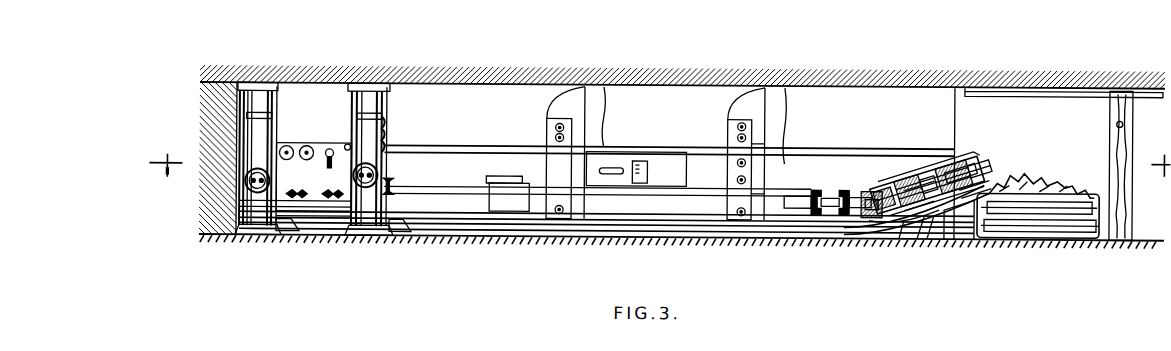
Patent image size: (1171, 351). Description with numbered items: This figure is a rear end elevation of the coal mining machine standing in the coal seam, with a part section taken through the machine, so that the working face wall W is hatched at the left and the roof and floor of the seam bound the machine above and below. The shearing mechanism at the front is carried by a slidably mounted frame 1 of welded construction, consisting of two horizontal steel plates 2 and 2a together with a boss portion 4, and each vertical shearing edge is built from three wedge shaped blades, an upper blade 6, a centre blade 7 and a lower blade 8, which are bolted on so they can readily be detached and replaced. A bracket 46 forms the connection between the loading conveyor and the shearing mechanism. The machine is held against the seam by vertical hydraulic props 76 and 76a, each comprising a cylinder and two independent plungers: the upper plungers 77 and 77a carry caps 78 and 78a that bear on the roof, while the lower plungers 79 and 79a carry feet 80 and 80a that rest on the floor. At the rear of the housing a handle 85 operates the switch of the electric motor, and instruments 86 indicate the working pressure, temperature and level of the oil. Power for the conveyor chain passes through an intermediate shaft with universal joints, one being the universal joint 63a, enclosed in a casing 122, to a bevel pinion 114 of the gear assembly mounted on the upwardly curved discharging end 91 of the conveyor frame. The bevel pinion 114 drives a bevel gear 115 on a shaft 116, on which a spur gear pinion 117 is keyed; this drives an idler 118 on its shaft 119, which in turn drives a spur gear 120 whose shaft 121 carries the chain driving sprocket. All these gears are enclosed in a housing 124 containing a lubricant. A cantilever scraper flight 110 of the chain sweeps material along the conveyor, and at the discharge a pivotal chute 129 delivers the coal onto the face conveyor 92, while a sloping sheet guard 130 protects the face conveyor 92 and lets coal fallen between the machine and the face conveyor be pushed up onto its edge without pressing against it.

The slidably mounted frame 1 is at (160, 165).
The horizontal steel plate 2 is at (480, 140).
The horizontal steel plate 2a is at (452, 206).
The boss portion 4 is at (628, 160).
The upper blade 6 is at (758, 127).
The centre blade 7 is at (760, 158).
The lower blade 8 is at (780, 228).
The bracket 46 is at (505, 200).
The universal joint 63a is at (835, 203).
The vertical hydraulic prop 76 is at (403, 217).
The vertical hydraulic prop 76a is at (257, 214).
The upper plunger 77 is at (387, 112).
The upper plunger 77a is at (247, 82).
The cap 78 is at (367, 82).
The cap 78a is at (262, 82).
The lower plunger 79 is at (375, 237).
The lower plunger 79a is at (258, 237).
The foot 80 is at (364, 237).
The foot 80a is at (250, 237).
The handle 85 is at (330, 160).
The instruments 86 is at (277, 143).
The discharging end 91 is at (923, 237).
The face conveyor 92 is at (1075, 237).
The cantilever scraper flight 110 is at (992, 175).
The bevel pinion 114 is at (873, 185).
The bevel gear 115 is at (892, 172).
The shaft 116 is at (906, 236).
The spur gear pinion 117 is at (880, 234).
The idler 118 is at (931, 237).
The idler shaft 119 is at (913, 182).
The spur gear 120 is at (957, 168).
The shaft 121 is at (950, 237).
The casing 122 is at (968, 175).
The housing 124 is at (882, 182).
The pivotal chute 129 is at (1030, 170).
The sloping sheet guard 130 is at (993, 240).
The wall W is at (218, 198).